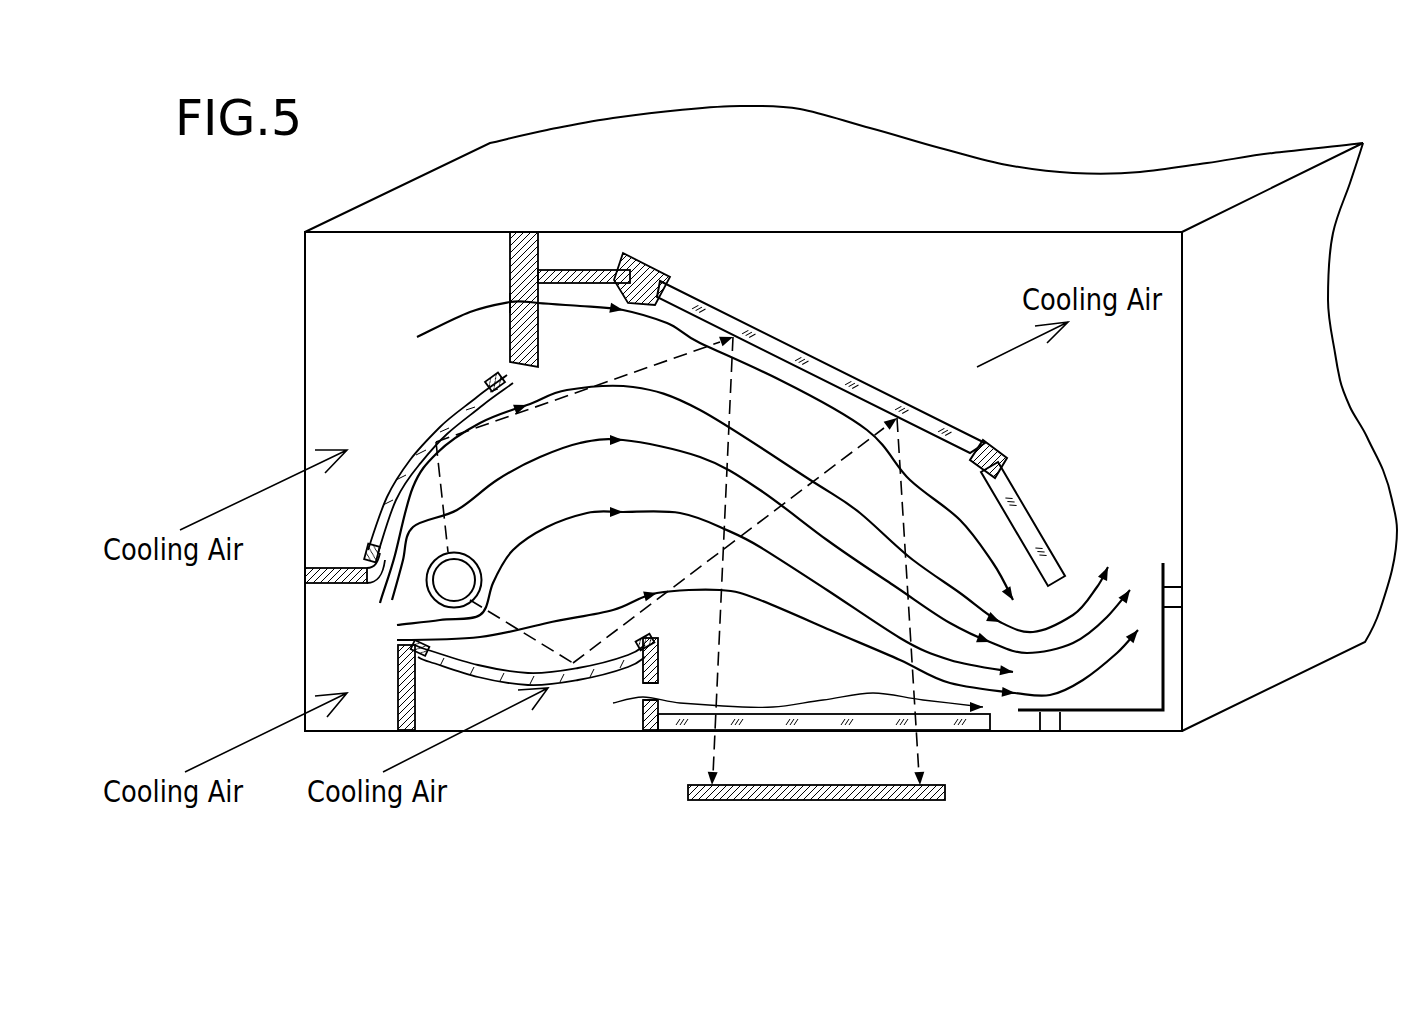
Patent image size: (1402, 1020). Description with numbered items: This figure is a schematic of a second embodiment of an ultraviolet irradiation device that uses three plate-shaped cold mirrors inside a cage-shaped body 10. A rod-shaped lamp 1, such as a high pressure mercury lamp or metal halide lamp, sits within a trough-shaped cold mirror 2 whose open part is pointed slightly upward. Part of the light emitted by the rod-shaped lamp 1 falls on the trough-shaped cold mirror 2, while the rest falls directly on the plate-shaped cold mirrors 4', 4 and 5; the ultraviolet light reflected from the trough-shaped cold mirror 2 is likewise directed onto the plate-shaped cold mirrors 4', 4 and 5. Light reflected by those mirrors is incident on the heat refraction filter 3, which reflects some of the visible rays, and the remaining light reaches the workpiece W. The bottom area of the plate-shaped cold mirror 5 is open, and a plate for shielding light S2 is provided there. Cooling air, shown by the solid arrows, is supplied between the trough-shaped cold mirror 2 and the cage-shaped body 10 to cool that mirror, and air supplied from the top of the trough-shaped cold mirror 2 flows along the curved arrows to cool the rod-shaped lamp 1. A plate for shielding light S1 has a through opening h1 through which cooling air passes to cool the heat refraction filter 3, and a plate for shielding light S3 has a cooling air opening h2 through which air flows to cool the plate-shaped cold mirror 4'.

The cage-shaped body 10 is at (413, 178).
The plate for shielding light S3 is at (538, 250).
The cooling air opening h2 is at (510, 302).
The plate-shaped cold mirror 4' is at (604, 235).
The trough-shaped cold mirror 2 is at (435, 415).
The rod-shaped lamp 1 is at (430, 592).
The plate-shaped cold mirror 4 is at (821, 367).
The plate-shaped cold mirror 5 is at (1022, 500).
The plate for shielding light S1 is at (660, 660).
The through opening for cooling air h1 is at (597, 733).
The heat refraction filter 3 is at (972, 732).
The plate for shielding light S2 is at (1165, 640).
The workpiece W is at (826, 803).